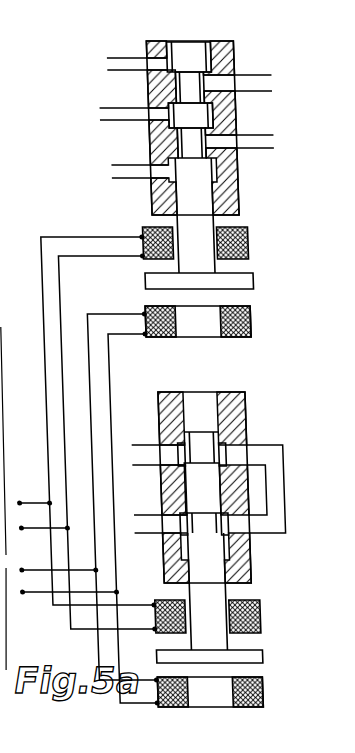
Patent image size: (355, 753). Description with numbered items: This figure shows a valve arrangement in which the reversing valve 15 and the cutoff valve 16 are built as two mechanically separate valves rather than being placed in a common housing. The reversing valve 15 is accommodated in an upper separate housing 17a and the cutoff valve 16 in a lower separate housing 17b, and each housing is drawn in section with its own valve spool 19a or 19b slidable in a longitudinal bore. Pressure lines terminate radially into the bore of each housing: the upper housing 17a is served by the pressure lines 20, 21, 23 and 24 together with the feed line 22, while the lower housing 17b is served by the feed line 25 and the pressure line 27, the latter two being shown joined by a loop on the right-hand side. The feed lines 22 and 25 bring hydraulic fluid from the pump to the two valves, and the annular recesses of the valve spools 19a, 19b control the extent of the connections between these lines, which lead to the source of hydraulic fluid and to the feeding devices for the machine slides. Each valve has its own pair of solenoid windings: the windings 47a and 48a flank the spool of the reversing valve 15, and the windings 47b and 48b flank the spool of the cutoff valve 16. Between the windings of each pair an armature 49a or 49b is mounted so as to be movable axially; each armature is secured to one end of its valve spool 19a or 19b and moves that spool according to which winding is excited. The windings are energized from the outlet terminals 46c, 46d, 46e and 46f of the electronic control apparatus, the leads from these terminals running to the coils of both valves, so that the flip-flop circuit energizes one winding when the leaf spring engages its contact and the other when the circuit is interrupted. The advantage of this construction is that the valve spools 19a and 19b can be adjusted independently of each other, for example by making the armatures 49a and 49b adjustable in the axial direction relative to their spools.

The reversing valve 15 is at (146, 44).
The cutoff valve 16 is at (145, 408).
The separate housing 17a is at (219, 184).
The separate housing 17b is at (222, 553).
The valve spool 19a is at (184, 204).
The valve spool 19b is at (181, 568).
The pressure line 20 is at (110, 63).
The pressure line 21 is at (271, 84).
The feed line 22 is at (111, 117).
The pressure line 23 is at (271, 140).
The pressure line 24 is at (116, 173).
The feed line 25 is at (142, 456).
The pressure line 27 is at (143, 525).
The outlet terminal 46c is at (78, 421).
The outlet terminal 46d is at (80, 443).
The outlet terminal 46e is at (83, 497).
The electrical lead 46f is at (85, 519).
The solenoid winding 47a is at (242, 243).
The solenoid winding 47b is at (242, 612).
The solenoid winding 48a is at (242, 320).
The solenoid winding 48b is at (242, 688).
The armature 49a is at (243, 278).
The armature 49b is at (243, 655).